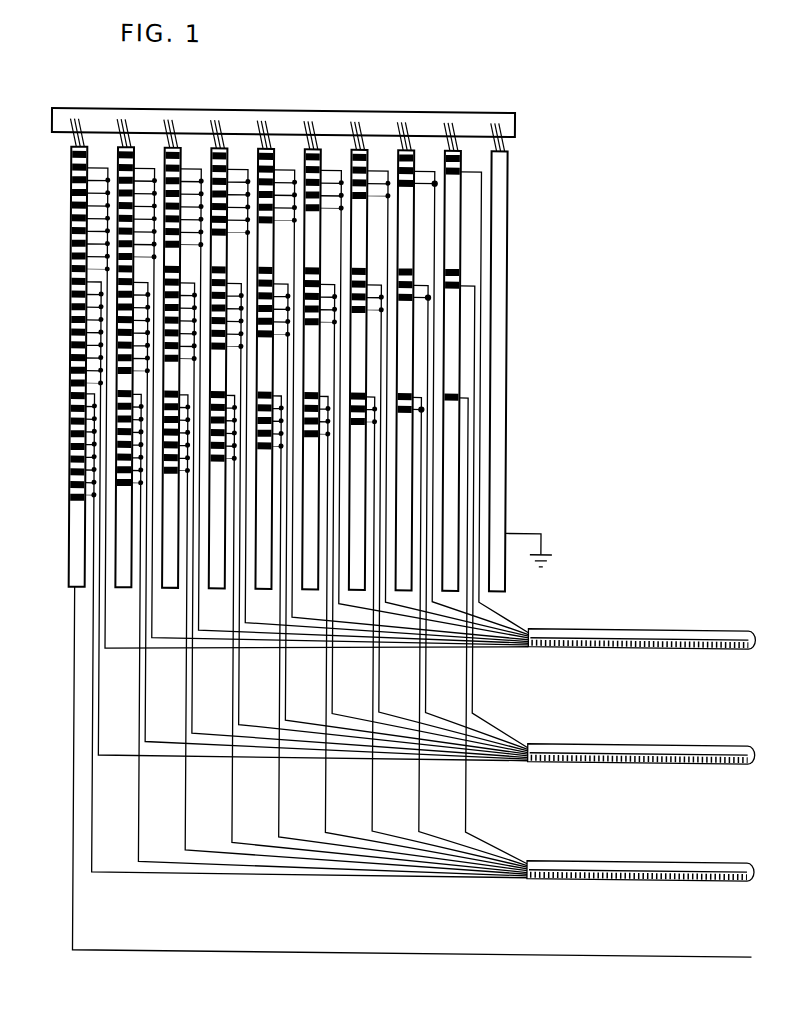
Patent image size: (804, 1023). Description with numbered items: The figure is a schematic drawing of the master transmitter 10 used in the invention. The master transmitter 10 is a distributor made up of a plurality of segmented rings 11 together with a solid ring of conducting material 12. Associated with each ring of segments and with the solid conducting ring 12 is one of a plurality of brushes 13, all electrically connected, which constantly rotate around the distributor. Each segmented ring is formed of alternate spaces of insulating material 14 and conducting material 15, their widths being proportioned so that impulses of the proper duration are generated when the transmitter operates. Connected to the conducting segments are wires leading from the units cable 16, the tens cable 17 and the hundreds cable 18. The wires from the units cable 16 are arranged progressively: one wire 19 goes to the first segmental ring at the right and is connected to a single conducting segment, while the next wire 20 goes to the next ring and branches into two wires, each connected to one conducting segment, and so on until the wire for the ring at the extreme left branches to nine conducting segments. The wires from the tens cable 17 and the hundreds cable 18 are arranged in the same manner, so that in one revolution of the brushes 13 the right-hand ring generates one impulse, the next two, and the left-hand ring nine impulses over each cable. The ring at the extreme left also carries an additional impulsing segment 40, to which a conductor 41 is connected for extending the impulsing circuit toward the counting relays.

The master transmitter 10 is at (524, 116).
The segmented rings 11 is at (117, 148).
The solid ring of conducting material 12 is at (507, 206).
The brushes 13 is at (221, 143).
The insulating material 14 is at (462, 278).
The conducting material 15 is at (462, 285).
The units cable 16 is at (421, 411).
The tens cable 17 is at (421, 523).
The hundreds cable 18 is at (420, 637).
The wire 19 is at (499, 608).
The wire 20 is at (496, 618).
The additional impulsing segment 40 is at (70, 566).
The conductor 41 is at (126, 952).